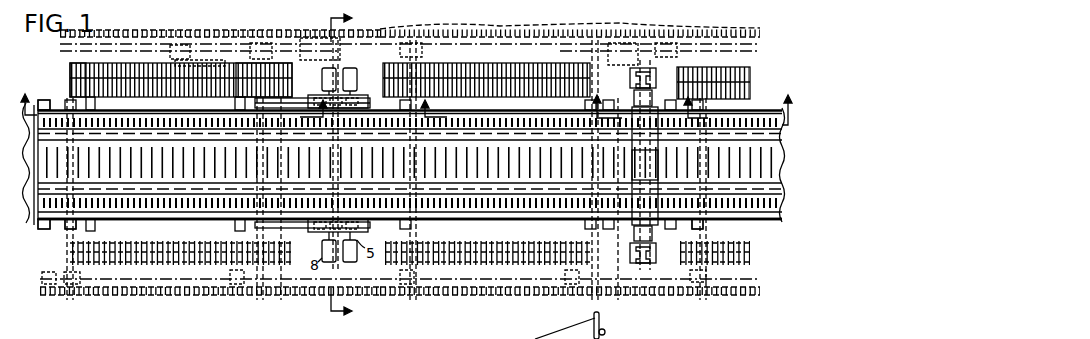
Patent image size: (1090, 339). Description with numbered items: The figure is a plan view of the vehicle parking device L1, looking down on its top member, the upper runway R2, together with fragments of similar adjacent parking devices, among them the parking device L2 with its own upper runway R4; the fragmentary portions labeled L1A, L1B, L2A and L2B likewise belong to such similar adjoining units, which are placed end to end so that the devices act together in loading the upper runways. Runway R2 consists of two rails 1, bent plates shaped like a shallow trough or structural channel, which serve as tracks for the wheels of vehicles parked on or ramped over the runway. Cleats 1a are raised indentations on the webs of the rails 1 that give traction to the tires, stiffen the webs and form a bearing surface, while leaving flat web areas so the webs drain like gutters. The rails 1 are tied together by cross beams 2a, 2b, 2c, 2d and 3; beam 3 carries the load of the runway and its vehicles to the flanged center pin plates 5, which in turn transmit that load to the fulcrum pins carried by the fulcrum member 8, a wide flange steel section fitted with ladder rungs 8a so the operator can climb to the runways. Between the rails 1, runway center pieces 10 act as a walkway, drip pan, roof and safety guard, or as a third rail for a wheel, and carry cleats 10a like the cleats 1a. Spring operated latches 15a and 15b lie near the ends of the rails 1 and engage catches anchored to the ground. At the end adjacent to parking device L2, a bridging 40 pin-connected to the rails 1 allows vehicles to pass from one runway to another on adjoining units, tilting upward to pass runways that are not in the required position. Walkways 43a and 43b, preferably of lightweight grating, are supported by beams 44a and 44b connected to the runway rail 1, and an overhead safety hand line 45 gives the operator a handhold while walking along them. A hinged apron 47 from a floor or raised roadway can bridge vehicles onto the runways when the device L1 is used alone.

The rails 1 is at (150, 146).
The cleats 1a is at (186, 128).
The cross beam 2a is at (72, 160).
The cross beam 2b is at (270, 160).
The cross beam 2c is at (428, 160).
The cross beam 2d is at (580, 158).
The beam 3 is at (380, 158).
The flanged center pin plates 5 is at (360, 97).
The fulcrum member 8 is at (322, 66).
The ladder rungs 8a is at (357, 76).
The runway center pieces 10 is at (532, 160).
The cleats 10a is at (500, 152).
The spring operated latch 15a is at (44, 100).
The spring operated latch 15b is at (632, 98).
The bridging 40 is at (660, 172).
The walkway 43a is at (515, 60).
The walkway 43b is at (140, 63).
The beam 44a is at (240, 66).
The beam 44b is at (97, 63).
The overhead hand rail 45 is at (542, 325).
The hinged apron 47 is at (40, 223).
The upper runway R2 is at (136, 226).
The upper runway R4 is at (728, 224).
The vehicle parking device L1 is at (168, 220).
The parking device L2 is at (754, 222).
The line 1 upper branch L1A is at (190, 34).
The line 1 lower branch L1B is at (122, 296).
The line 2 upper branch L2A is at (698, 35).
The line 2 lower branch L2B is at (740, 296).